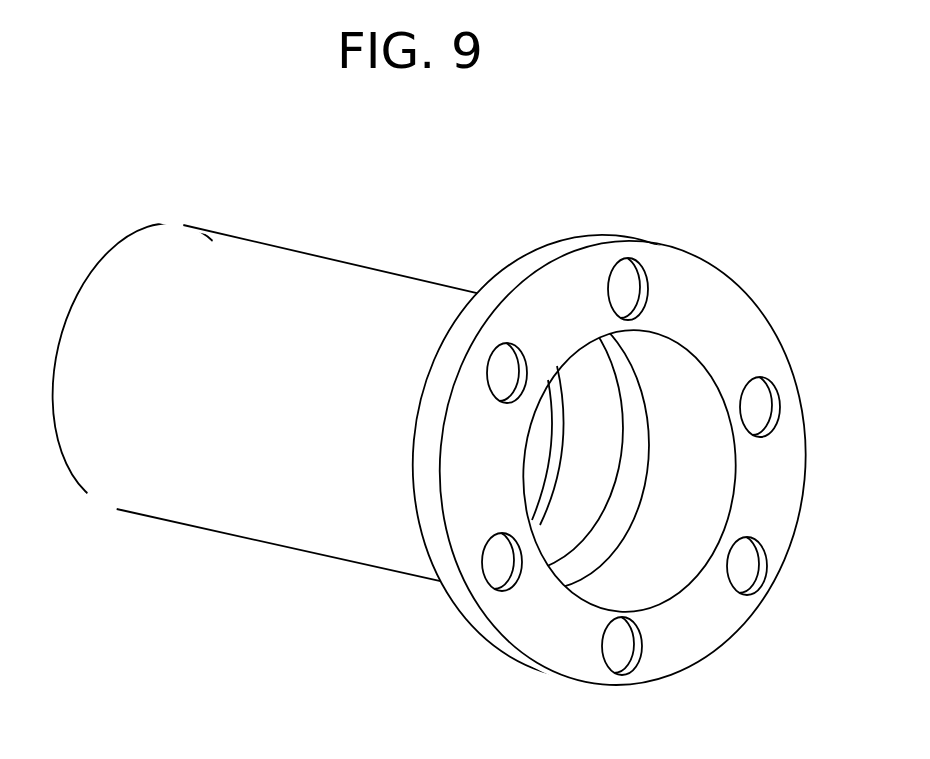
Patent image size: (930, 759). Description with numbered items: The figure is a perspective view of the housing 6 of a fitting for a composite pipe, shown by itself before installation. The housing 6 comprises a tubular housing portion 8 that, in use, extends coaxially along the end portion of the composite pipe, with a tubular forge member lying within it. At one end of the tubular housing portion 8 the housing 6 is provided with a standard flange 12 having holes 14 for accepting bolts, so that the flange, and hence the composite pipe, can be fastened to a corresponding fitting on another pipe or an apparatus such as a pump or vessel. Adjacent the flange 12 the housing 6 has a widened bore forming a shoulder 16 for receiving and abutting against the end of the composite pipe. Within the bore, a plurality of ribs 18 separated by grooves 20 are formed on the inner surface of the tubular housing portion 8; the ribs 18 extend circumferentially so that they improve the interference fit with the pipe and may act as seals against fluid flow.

The housing 6 is at (381, 224).
The tubular housing portion 8 is at (269, 265).
The flange 12 is at (730, 312).
The holes 14 is at (758, 537).
The shoulder 16 is at (635, 402).
The ribs 18 is at (535, 447).
The grooves 20 is at (597, 420).